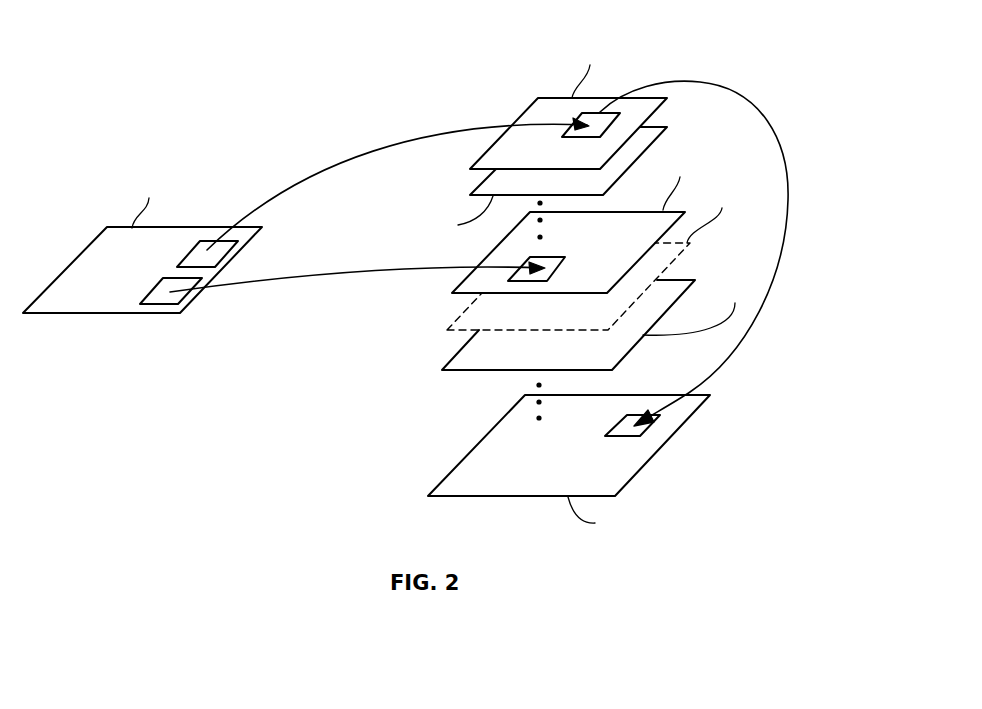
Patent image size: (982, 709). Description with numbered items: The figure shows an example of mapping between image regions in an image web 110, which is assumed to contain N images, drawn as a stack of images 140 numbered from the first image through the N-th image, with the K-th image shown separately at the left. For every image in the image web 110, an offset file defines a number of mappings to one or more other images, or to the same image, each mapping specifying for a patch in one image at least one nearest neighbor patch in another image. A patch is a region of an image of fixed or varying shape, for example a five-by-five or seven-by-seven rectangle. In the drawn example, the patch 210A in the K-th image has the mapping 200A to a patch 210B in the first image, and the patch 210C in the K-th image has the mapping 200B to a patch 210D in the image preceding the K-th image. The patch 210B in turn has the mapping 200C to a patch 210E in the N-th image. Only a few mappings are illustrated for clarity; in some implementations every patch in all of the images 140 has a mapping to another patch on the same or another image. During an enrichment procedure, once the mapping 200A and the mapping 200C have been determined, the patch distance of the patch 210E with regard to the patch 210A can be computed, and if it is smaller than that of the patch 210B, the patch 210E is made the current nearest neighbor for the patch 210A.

The image web 110 is at (188, 44).
The images 140 is at (405, 416).
The mapping 200A is at (353, 160).
The mapping 200B is at (285, 278).
The mapping 200C is at (788, 200).
The patch 210A is at (188, 257).
The patch 210B is at (585, 138).
The patch 210C is at (150, 290).
The patch 210D is at (557, 257).
The patch 210E is at (627, 437).